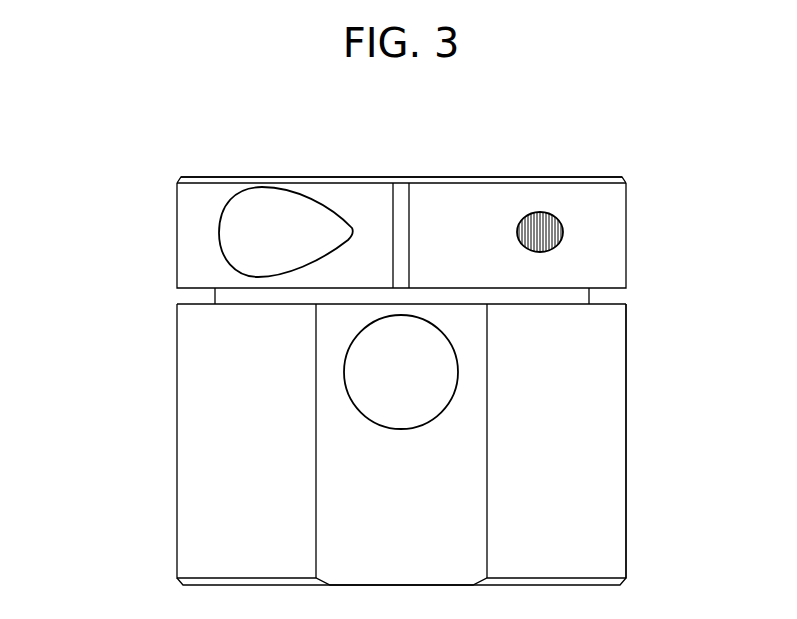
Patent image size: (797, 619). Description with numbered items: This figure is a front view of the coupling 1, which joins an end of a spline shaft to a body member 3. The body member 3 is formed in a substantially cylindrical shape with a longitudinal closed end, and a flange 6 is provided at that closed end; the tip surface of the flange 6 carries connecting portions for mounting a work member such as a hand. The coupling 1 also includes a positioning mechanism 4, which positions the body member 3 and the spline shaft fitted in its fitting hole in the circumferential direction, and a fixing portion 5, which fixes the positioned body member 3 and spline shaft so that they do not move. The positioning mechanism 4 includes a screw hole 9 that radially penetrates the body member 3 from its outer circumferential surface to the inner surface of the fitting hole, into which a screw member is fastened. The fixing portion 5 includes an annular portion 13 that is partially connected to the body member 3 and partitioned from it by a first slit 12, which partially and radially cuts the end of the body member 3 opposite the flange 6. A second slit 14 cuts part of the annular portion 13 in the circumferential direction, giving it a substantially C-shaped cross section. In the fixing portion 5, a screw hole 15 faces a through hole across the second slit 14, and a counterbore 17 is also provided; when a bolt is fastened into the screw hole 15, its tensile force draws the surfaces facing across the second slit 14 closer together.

The coupling 1 is at (110, 156).
The body member 3 is at (642, 437).
The positioning mechanism 4 is at (219, 162).
The fixing portion 5 is at (323, 218).
The flange 6 is at (626, 495).
The screw hole 9 is at (449, 361).
The first slit 12 is at (289, 304).
The annular portion 13 is at (348, 177).
The second slit 14 is at (403, 208).
The screw hole 15 is at (556, 225).
The counterbore 17 is at (240, 240).